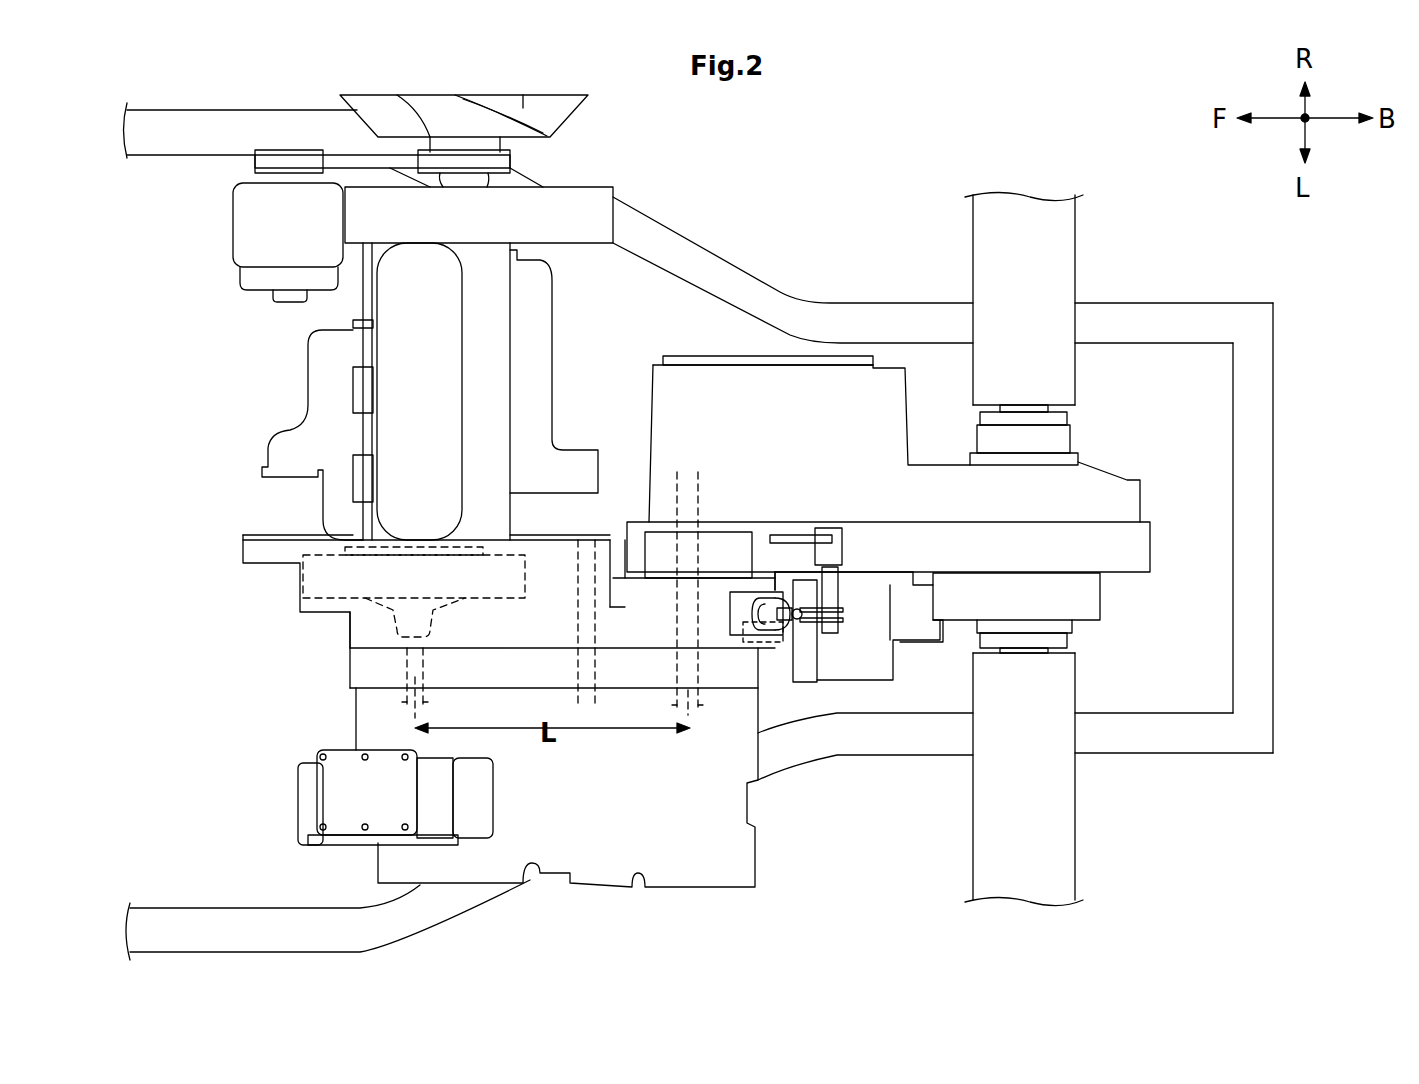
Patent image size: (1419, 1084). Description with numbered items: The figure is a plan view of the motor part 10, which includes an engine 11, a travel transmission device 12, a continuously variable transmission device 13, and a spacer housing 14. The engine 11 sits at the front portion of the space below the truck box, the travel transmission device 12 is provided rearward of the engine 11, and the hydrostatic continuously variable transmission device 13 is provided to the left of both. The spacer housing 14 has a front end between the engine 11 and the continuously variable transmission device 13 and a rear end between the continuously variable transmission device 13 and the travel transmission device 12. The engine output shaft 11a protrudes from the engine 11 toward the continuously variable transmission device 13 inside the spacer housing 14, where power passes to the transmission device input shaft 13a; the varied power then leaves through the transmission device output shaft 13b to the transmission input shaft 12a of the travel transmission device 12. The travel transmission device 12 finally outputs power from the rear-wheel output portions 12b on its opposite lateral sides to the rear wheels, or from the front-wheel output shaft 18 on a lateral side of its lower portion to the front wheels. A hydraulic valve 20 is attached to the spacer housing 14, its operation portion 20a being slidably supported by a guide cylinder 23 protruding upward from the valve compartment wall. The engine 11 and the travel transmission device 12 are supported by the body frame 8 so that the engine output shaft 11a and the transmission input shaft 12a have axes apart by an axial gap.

The body frame 8 is at (727, 285).
The motor part 10 is at (357, 391).
The engine 11 is at (305, 402).
The engine output shaft 11a is at (392, 622).
The travel transmission device 12 is at (1105, 505).
The transmission input shaft 12a is at (672, 490).
The rear-wheel output portions 12b is at (1045, 260).
The continuously variable transmission device 13 is at (760, 862).
The transmission device input shaft 13a is at (405, 665).
The transmission device output shaft 13b is at (598, 626).
The spacer housing 14 is at (545, 588).
The front-wheel output shaft 18 is at (782, 642).
The hydraulic valve 20 is at (723, 532).
The operation portion 20a is at (800, 610).
The guide cylinder 23 is at (742, 628).